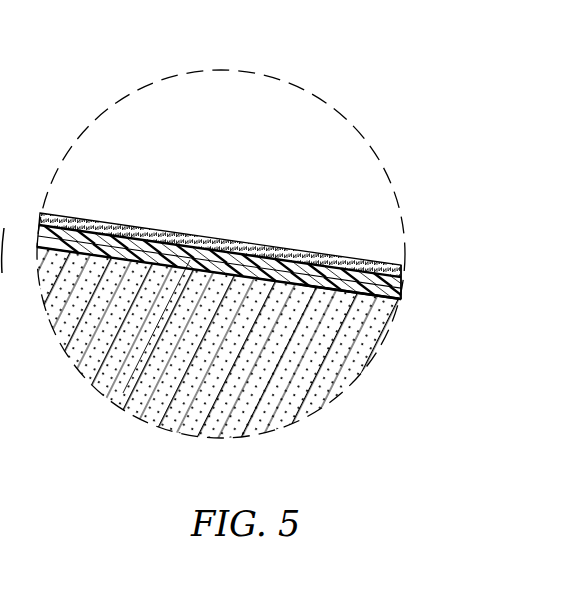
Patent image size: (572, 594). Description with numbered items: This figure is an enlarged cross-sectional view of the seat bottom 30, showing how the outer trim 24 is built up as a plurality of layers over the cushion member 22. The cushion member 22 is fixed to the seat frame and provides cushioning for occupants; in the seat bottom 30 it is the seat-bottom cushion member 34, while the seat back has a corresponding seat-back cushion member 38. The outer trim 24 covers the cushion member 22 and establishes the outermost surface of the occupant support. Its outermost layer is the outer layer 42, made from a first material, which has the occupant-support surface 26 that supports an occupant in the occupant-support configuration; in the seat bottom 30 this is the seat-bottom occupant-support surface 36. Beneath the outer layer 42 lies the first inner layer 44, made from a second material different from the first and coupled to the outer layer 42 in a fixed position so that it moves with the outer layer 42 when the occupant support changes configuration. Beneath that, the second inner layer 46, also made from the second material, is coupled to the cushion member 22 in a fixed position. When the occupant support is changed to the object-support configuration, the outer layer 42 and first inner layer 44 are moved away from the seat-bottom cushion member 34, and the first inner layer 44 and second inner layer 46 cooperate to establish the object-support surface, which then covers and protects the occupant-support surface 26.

The seat bottom 30 is at (99, 161).
The outer trim 24 is at (265, 235).
The seat-bottom occupant-support surface 36 is at (307, 257).
The occupant-support surface 26 is at (343, 263).
The outer layer 42 is at (397, 270).
The first inner layer 44 is at (402, 282).
The second inner layer 46 is at (378, 299).
The cushion member 22 is at (317, 388).
The seat-bottom cushion member 34 is at (146, 390).
The seat-back cushion member 38 is at (10, 309).